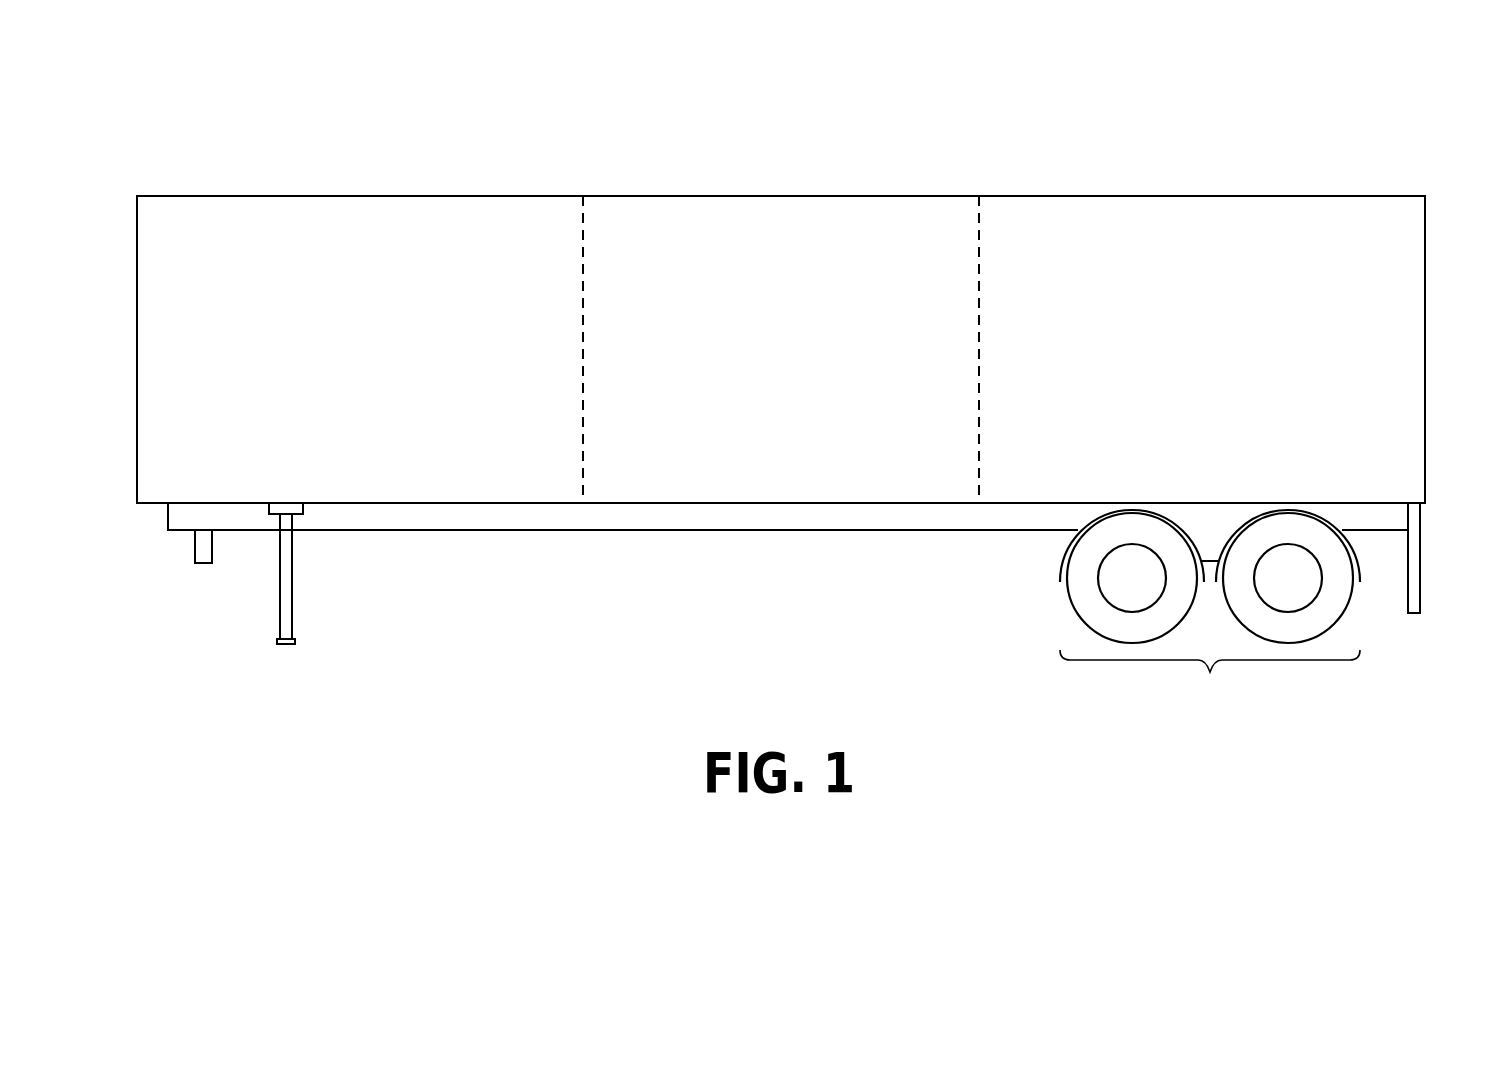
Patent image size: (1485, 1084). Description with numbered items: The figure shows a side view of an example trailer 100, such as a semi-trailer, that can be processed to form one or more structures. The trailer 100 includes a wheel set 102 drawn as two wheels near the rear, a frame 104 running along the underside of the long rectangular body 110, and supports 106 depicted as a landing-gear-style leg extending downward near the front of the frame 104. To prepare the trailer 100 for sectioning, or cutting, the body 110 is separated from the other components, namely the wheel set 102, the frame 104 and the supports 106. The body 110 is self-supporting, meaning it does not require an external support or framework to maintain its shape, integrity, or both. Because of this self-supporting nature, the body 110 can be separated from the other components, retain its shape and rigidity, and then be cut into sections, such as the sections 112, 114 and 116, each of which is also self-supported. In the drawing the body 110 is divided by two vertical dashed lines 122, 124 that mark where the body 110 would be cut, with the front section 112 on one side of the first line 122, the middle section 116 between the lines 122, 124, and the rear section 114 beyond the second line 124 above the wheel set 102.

The trailer 100 is at (140, 154).
The wheel set 102 is at (1210, 607).
The frame 104 is at (503, 542).
The supports 106 is at (314, 602).
The body 110 is at (1441, 180).
The section 112 is at (342, 358).
The section 114 is at (1182, 358).
The section 116 is at (761, 358).
The first partition line 122 is at (583, 196).
The second partition line 124 is at (979, 196).